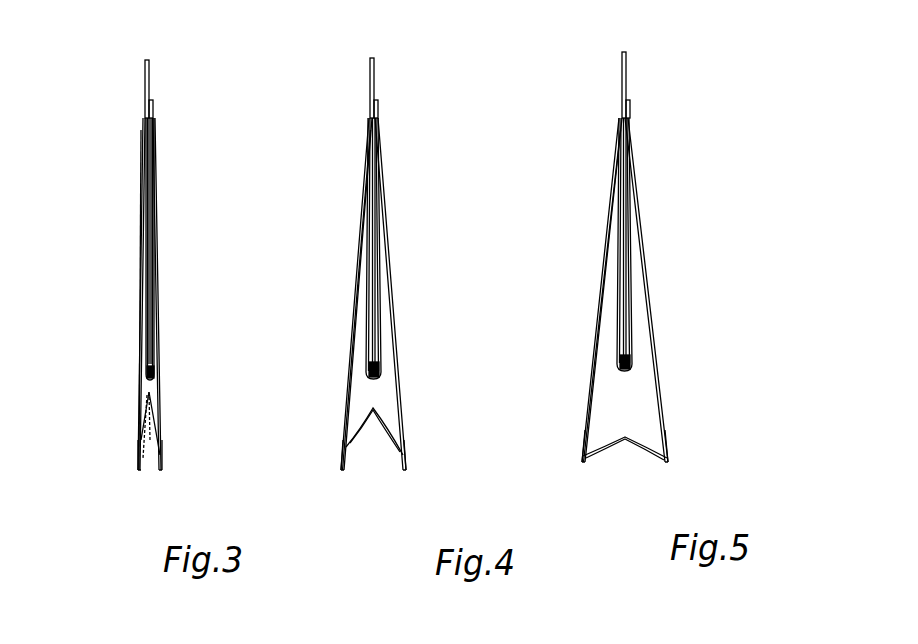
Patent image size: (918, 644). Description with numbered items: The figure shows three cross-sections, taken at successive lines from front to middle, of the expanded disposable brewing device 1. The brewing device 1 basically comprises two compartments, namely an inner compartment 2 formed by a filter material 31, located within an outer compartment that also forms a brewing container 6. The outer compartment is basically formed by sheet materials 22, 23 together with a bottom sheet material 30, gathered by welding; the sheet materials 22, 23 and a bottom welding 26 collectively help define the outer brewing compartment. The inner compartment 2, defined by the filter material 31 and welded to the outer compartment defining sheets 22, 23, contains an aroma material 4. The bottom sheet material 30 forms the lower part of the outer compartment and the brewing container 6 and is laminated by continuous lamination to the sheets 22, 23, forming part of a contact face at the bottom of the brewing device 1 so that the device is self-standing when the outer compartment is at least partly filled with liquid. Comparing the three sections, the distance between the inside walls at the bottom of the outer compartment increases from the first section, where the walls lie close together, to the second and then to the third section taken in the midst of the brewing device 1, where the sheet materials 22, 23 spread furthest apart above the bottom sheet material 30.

In FIG. 3, the brewing device 1 is at (197, 128).
In FIG. 4, the brewing device 1 is at (448, 122).
In FIG. 5, the brewing device 1 is at (690, 122).
In FIG. 3, the inner compartment 2 is at (148, 340).
In FIG. 4, the inner compartment 2 is at (372, 340).
In FIG. 5, the inner compartment 2 is at (623, 335).
In FIG. 3, the aroma material 4 is at (155, 367).
In FIG. 4, the aroma material 4 is at (379, 368).
In FIG. 5, the aroma material 4 is at (628, 360).
In FIG. 3, the brewing container 6 is at (155, 405).
In FIG. 4, the brewing container 6 is at (390, 407).
In FIG. 5, the brewing container 6 is at (642, 398).
In FIG. 3, the sheet material 22 is at (155, 225).
In FIG. 4, the sheet material 22 is at (387, 223).
In FIG. 5, the sheet material 22 is at (640, 213).
In FIG. 3, the sheet material 23 is at (138, 390).
In FIG. 4, the sheet material 23 is at (350, 332).
In FIG. 5, the sheet material 23 is at (595, 322).
In FIG. 3, the bottom welding 26 is at (138, 447).
In FIG. 4, the bottom welding 26 is at (342, 453).
In FIG. 5, the bottom welding 26 is at (583, 456).
In FIG. 3, the bottom sheet material 30 is at (148, 463).
In FIG. 4, the bottom sheet material 30 is at (381, 425).
In FIG. 5, the bottom sheet material 30 is at (630, 447).
In FIG. 3, the filter material 31 is at (157, 300).
In FIG. 4, the filter material 31 is at (378, 300).
In FIG. 5, the filter material 31 is at (628, 292).